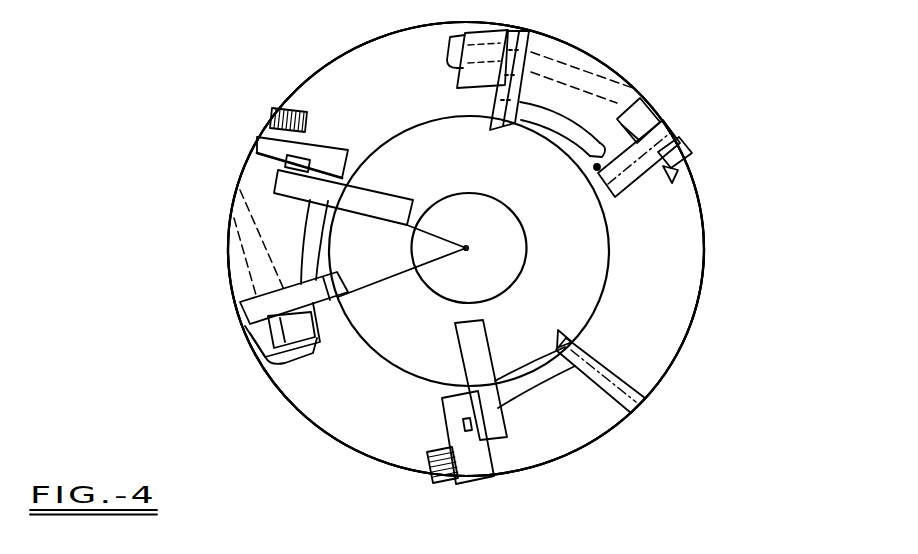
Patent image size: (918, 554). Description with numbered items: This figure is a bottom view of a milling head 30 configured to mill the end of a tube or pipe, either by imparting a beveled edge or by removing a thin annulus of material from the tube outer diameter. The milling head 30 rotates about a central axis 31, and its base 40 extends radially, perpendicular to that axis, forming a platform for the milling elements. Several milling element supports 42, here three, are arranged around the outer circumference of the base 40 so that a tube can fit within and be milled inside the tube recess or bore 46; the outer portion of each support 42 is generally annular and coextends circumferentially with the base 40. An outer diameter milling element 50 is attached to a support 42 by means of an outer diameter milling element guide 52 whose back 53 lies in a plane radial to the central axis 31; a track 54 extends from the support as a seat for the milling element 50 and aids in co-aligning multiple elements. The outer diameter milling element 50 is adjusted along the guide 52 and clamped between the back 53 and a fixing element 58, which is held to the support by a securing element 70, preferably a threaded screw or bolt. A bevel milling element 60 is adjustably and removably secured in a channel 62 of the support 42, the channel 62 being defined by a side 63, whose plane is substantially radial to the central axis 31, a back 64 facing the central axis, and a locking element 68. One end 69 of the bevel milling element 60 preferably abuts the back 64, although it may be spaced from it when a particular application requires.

The milling head 30 is at (314, 54).
The central axis 31 is at (468, 250).
The base 40 is at (687, 337).
The milling element support 42 is at (617, 70).
The tube recess or bore 46 is at (571, 305).
The outer diameter milling element 50 is at (495, 128).
The outer diameter milling element guide 52 is at (242, 268).
The back 53 is at (248, 296).
The track 54 is at (262, 318).
The fixing element 58 is at (300, 326).
The bevel milling element 60 is at (285, 172).
The channel 62 is at (597, 170).
The side 63 is at (597, 150).
The back 64 is at (619, 118).
The locking element 68 is at (443, 402).
The end 69 is at (245, 195).
The securing element 70 is at (460, 38).